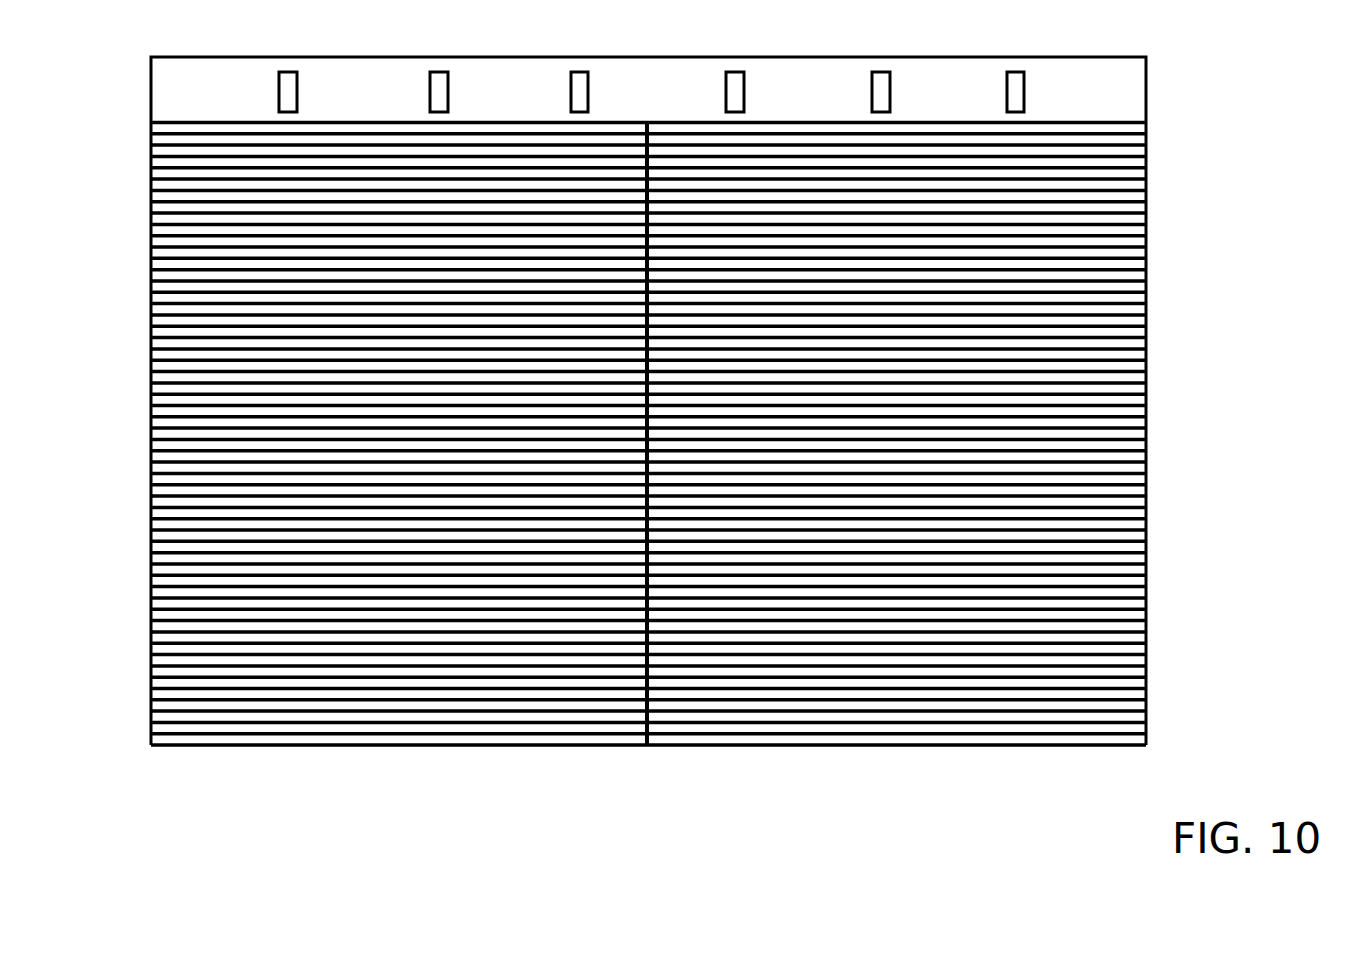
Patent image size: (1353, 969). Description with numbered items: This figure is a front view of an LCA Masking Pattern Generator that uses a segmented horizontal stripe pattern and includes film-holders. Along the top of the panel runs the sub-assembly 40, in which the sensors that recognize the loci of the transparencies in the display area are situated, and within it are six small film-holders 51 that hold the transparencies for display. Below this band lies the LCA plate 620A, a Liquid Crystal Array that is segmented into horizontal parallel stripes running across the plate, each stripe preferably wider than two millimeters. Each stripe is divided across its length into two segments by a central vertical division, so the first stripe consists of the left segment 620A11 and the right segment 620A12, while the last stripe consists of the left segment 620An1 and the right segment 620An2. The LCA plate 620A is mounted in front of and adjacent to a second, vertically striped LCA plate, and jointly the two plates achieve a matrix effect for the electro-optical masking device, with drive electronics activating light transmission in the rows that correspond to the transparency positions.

The sub-assembly 40 is at (165, 107).
The film-holders 51 is at (297, 72).
The LCA plate 620A is at (152, 222).
The first segment of first stripe 620A11 is at (152, 131).
The second segment of first stripe 620A12 is at (1146, 128).
The first segment of last stripe 620An1 is at (152, 742).
The second segment of last stripe 620An2 is at (1146, 740).